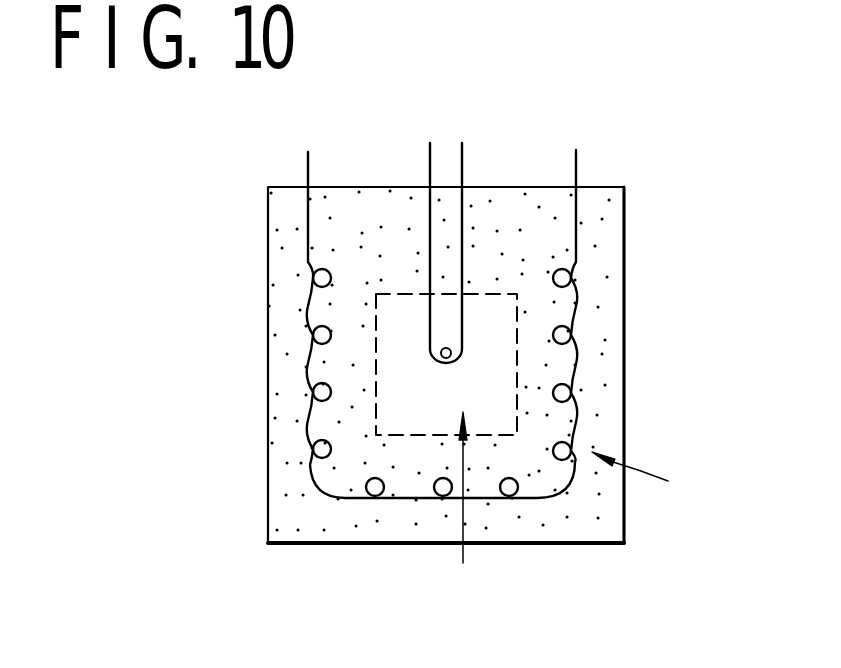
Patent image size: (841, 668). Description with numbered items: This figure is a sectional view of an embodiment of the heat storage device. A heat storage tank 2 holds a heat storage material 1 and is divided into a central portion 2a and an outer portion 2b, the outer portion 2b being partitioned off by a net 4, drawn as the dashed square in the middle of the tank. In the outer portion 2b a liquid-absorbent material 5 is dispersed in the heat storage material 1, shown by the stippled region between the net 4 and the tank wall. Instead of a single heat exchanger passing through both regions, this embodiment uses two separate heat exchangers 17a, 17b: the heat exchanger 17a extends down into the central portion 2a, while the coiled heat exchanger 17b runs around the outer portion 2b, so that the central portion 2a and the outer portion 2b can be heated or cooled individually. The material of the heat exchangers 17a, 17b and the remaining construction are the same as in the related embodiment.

The heat storage material 1 is at (597, 272).
The heat storage tank 2 is at (625, 345).
The central portion 2a is at (450, 515).
The outer portion 2b is at (661, 481).
The net 4 is at (376, 381).
The liquid-absorbent material 5 is at (337, 525).
The heat exchanger 17a is at (463, 167).
The heat exchanger 17b is at (576, 167).